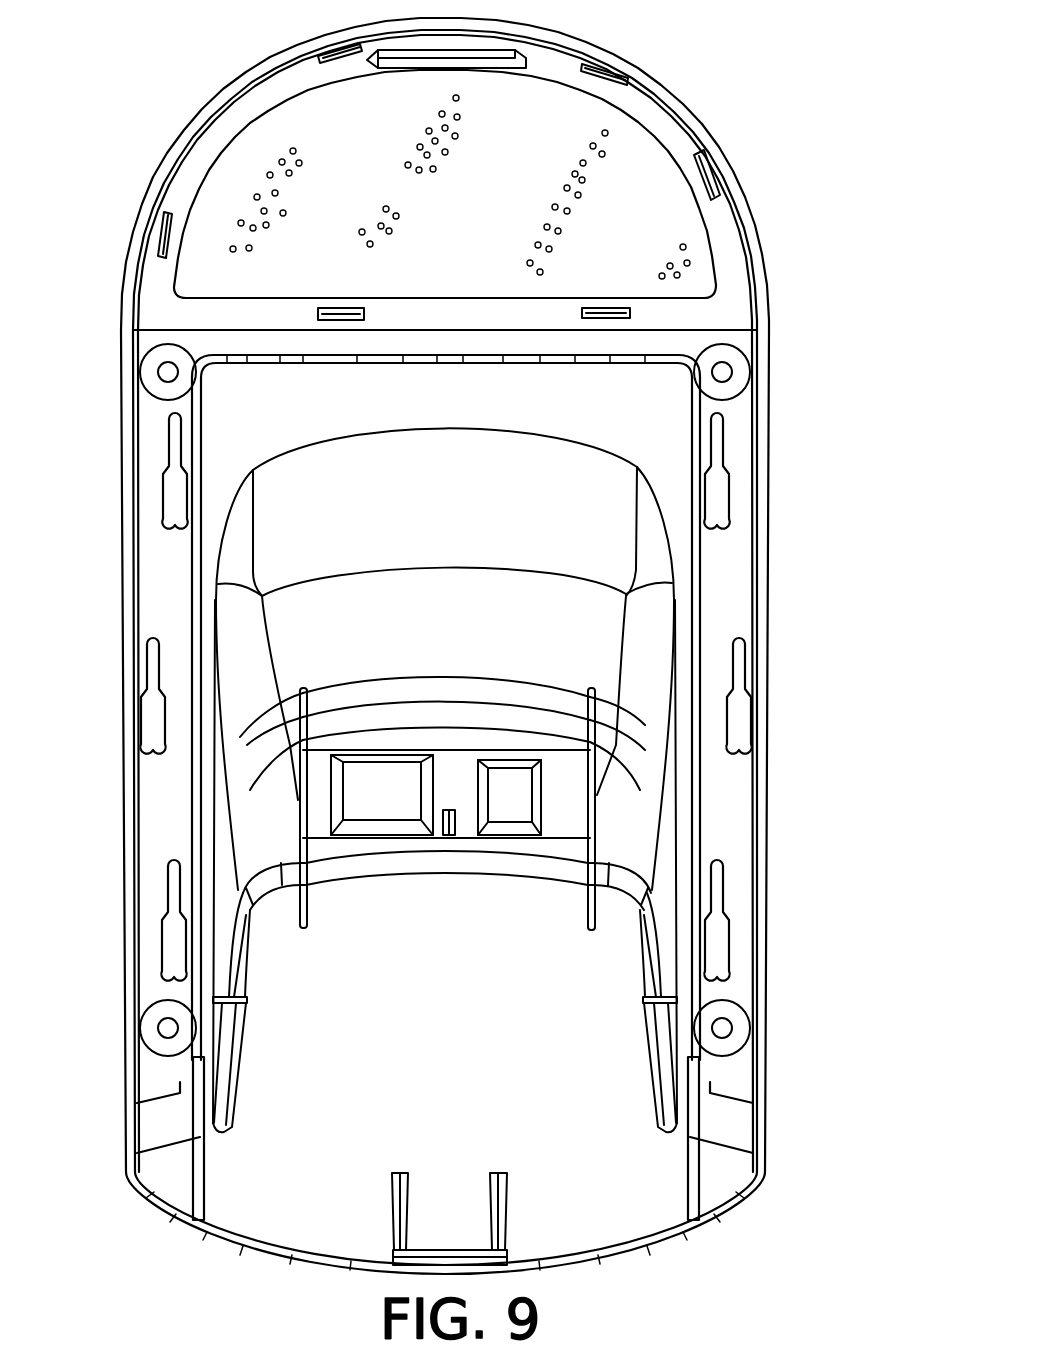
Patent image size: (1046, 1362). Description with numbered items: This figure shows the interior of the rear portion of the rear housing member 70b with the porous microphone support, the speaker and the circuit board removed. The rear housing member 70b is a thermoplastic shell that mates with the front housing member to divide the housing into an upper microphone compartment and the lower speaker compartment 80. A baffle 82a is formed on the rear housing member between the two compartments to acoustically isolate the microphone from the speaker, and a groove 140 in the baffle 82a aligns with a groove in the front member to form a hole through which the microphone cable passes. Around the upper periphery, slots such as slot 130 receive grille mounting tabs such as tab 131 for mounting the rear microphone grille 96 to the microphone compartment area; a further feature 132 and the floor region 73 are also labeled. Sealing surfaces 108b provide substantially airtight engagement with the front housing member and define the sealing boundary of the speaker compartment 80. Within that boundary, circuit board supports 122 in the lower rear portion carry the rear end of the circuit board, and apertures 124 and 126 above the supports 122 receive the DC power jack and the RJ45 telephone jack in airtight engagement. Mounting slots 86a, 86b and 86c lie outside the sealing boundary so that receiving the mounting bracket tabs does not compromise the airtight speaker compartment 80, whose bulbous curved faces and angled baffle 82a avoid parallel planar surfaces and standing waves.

The rear housing member 70b is at (724, 150).
The rear microphone grille 96 is at (508, 197).
The top mounting tab 132 is at (302, 128).
The slot 130 is at (343, 303).
The tab 131 is at (364, 313).
The groove 140 is at (456, 366).
The baffle 82a is at (632, 361).
The mounting slot 86a is at (170, 498).
The mounting slot 86b is at (152, 715).
The mounting slot 86c is at (172, 936).
The sealing surfaces 108b is at (195, 575).
The speaker compartment 80 is at (598, 978).
The circuit board supports 122 is at (306, 899).
The aperture 124 is at (397, 798).
The aperture 126 is at (530, 802).
The floor 73 is at (469, 1058).